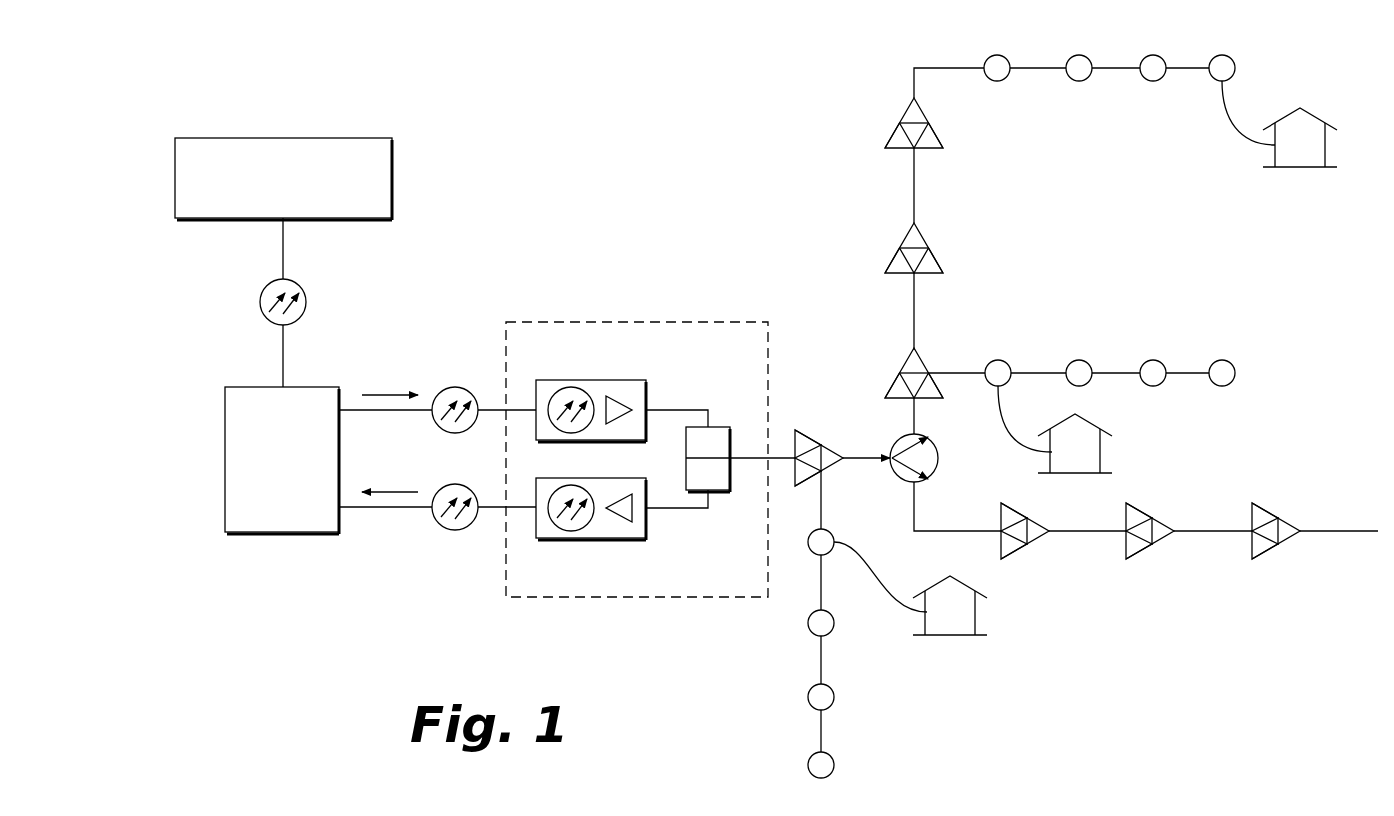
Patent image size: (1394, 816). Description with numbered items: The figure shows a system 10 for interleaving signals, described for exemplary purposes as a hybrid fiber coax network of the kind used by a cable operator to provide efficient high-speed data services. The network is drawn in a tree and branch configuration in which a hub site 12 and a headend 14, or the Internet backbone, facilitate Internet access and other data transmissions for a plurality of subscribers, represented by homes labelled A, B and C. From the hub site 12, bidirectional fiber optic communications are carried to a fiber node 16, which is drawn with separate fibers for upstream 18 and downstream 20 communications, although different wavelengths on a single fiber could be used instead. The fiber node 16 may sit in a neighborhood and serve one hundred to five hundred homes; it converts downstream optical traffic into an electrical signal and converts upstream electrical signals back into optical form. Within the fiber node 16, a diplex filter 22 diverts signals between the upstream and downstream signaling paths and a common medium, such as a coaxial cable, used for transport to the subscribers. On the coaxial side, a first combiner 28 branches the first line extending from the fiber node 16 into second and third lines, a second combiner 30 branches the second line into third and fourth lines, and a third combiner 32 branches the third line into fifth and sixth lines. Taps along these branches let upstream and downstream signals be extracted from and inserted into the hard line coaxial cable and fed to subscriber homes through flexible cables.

The system 10 is at (538, 88).
The hub site 12 is at (310, 387).
The headend 14 is at (283, 138).
The fiber node 16 is at (710, 322).
The upstream fiber 18 is at (590, 538).
The downstream fiber 20 is at (590, 380).
The diplex filter 22 is at (715, 427).
The first combiner 28 is at (810, 432).
The second combiner 30 is at (938, 458).
The third combiner 32 is at (922, 362).